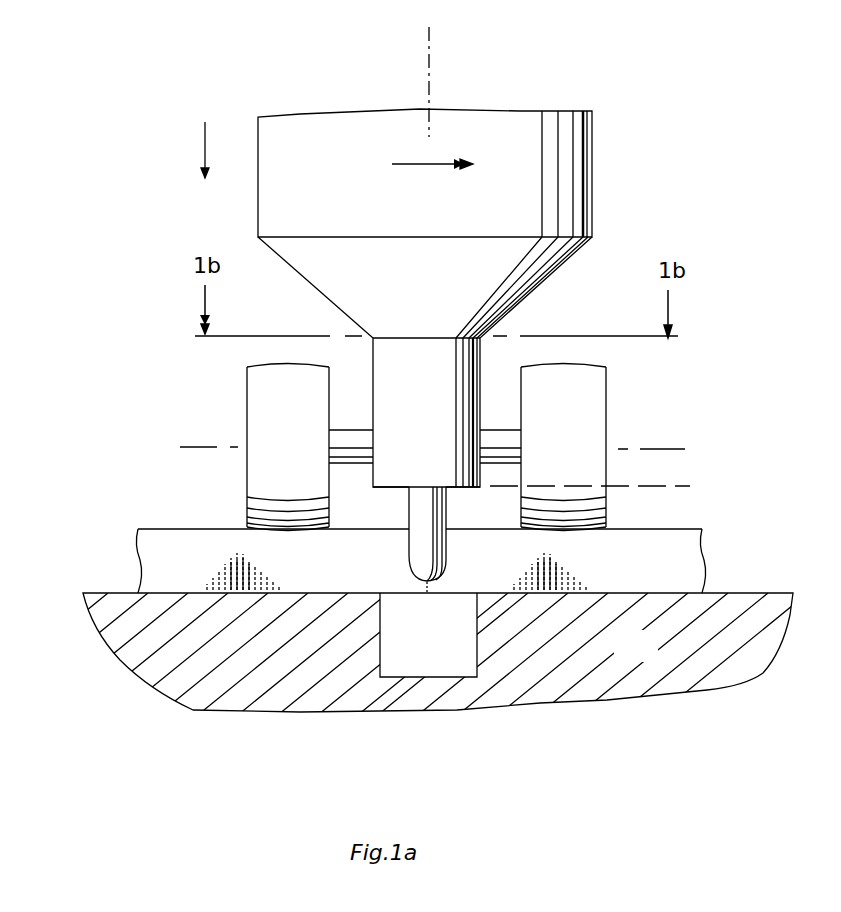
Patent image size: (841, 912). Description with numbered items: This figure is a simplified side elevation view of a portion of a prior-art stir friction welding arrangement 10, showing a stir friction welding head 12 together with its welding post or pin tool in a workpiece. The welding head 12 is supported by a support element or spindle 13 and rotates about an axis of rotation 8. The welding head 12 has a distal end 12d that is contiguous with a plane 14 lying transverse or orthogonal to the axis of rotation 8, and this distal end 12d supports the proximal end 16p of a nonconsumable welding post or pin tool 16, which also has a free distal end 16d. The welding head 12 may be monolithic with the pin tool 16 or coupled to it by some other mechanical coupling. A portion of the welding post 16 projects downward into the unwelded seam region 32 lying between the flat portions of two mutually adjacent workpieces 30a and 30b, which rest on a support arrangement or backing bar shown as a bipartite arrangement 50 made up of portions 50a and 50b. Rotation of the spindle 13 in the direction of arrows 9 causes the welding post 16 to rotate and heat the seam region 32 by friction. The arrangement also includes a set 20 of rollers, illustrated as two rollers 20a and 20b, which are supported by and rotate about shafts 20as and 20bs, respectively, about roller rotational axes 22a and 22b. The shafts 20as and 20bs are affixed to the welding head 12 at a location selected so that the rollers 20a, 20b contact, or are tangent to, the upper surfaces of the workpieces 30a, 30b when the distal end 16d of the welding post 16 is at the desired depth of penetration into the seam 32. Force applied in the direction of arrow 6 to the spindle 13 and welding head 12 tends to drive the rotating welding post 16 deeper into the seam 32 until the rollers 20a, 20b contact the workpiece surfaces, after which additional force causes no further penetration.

The arrow indicating direction of applied force 6 is at (203, 135).
The axis of rotation 8 is at (431, 46).
The arrows indicating direction of rotation 9 is at (429, 168).
The dispensing system 10 is at (129, 270).
The stir friction welding head 12 is at (483, 362).
The distal end of welding head 12d is at (400, 489).
The support element or spindle 13 is at (592, 172).
The plane 14 is at (668, 487).
The nonconsumable welding post or pin tool 16 is at (447, 515).
The free distal end of welding post 16d is at (445, 574).
The proximal end of welding post 16p is at (427, 487).
The set of rollers 20 is at (172, 348).
The roller 20a is at (247, 376).
The shaft 20as is at (343, 430).
The roller 20b is at (607, 382).
The shaft 20bs is at (512, 430).
The roller rotational axis 22a is at (190, 447).
The roller rotational axis 22b is at (672, 449).
The workpiece 30a is at (168, 529).
The workpiece 30b is at (703, 534).
The seam region 32 is at (426, 584).
The support arrangement or backing bar 50 is at (651, 659).
The backing bar portion 50a is at (100, 593).
The backing bar portion 50b is at (773, 593).